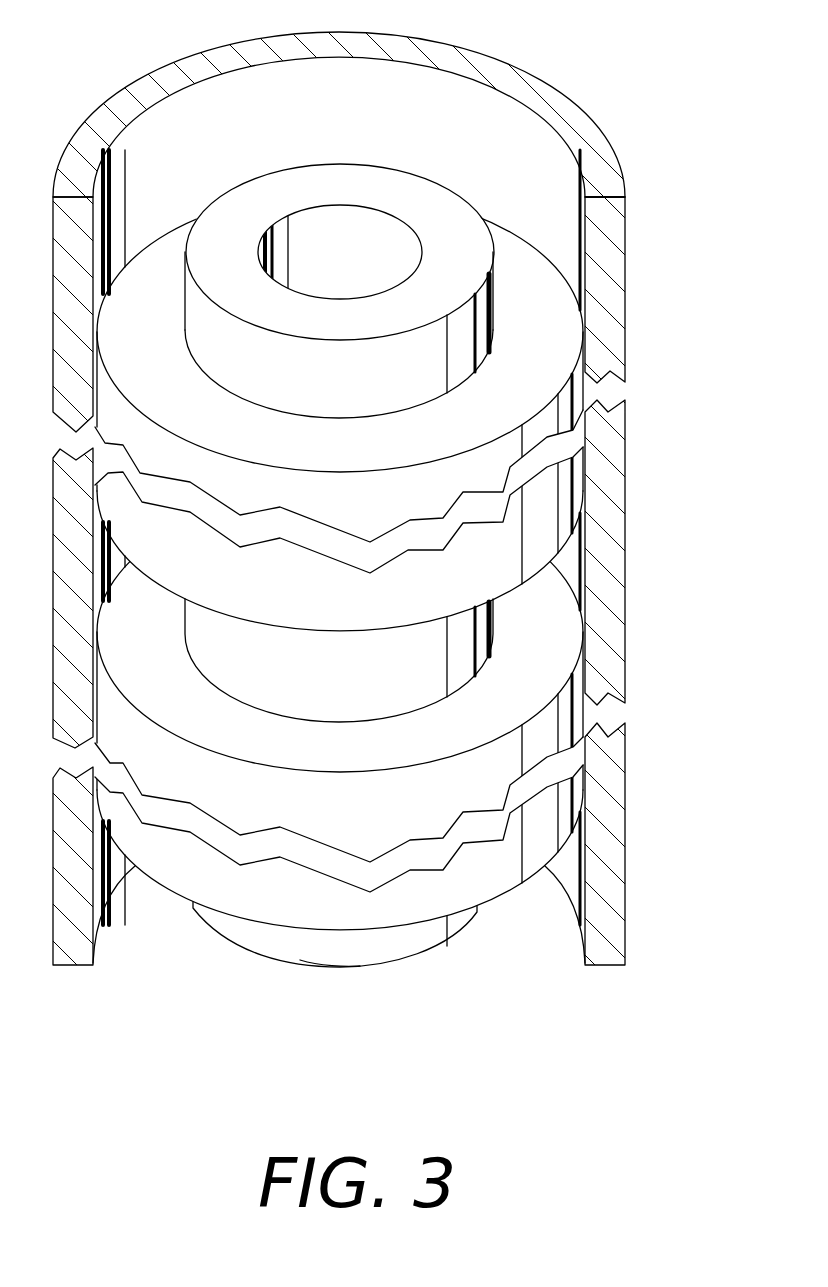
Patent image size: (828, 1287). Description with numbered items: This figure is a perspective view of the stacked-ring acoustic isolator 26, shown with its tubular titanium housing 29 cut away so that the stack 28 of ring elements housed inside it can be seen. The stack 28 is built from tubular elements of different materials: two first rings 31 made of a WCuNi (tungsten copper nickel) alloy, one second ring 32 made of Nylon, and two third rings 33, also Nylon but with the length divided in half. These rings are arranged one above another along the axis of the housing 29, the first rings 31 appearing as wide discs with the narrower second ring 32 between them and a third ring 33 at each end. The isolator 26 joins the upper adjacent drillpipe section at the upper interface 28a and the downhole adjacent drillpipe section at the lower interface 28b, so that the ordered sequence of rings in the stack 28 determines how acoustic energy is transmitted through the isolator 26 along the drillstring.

The stacked-ring acoustic isolator 26 is at (618, 80).
The stack 28 is at (273, 155).
The upper interface 28a is at (486, 263).
The lower interface 28b is at (410, 958).
The tubular titanium housing 29 is at (628, 197).
The first rings 31 is at (160, 348).
The second ring 32 is at (322, 690).
The third rings 33 is at (247, 268).